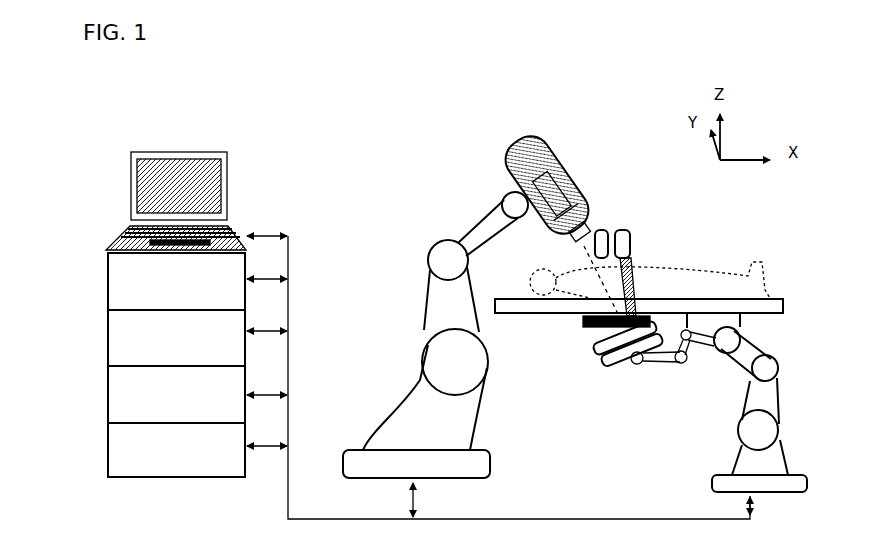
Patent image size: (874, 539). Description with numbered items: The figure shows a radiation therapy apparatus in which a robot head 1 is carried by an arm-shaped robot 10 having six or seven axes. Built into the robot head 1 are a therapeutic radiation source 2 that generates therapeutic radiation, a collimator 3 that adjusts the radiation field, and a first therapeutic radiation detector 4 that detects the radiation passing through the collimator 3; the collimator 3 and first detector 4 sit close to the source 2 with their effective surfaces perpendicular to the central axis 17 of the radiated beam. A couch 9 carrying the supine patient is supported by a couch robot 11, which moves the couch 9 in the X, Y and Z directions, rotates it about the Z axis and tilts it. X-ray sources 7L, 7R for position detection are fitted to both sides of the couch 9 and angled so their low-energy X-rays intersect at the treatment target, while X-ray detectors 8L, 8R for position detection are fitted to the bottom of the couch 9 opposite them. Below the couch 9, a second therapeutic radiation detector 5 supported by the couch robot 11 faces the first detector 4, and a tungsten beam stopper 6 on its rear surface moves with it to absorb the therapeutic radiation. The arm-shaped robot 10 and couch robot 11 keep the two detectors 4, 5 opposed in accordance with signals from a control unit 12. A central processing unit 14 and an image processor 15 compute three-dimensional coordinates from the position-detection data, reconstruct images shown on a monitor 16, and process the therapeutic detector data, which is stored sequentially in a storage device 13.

The robot head 1 is at (520, 143).
The therapeutic radiation source 2 is at (549, 170).
The collimator 3 is at (578, 196).
The first therapeutic radiation detector 4 is at (592, 213).
The second therapeutic radiation detector 5 is at (590, 343).
The beam stopper 6 is at (605, 358).
The X-ray source for position detection 7L is at (592, 246).
The X-ray source for position detection 7R is at (633, 241).
The X-ray detector for position detection 8L is at (583, 322).
The X-ray detector for position detection 8R is at (668, 362).
The couch 9 is at (782, 300).
The arm-shaped robot 10 is at (424, 304).
The couch robot 11 is at (778, 396).
The control unit 12 is at (108, 450).
The storage device 13 is at (108, 398).
The central processing unit 14 is at (108, 343).
The image processor 15 is at (108, 268).
The monitor 16 is at (227, 163).
The central axis 17 is at (645, 270).